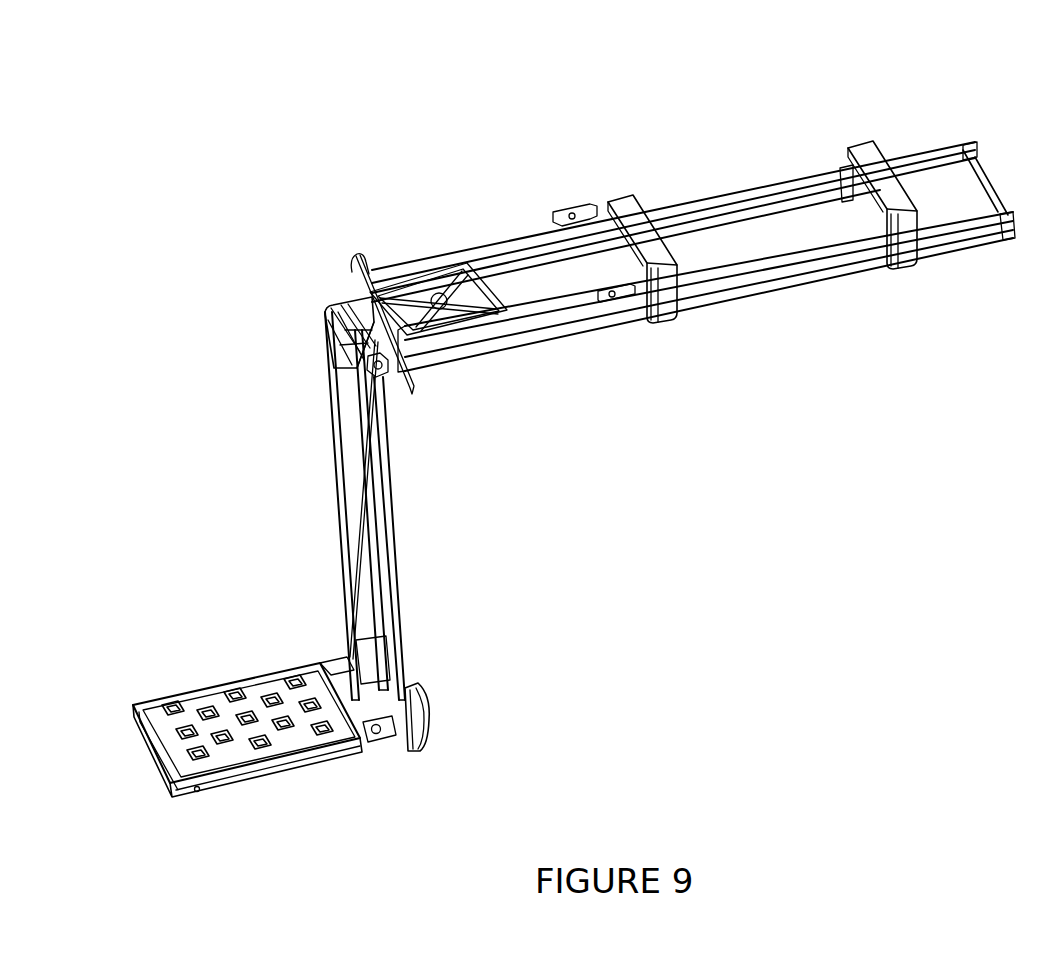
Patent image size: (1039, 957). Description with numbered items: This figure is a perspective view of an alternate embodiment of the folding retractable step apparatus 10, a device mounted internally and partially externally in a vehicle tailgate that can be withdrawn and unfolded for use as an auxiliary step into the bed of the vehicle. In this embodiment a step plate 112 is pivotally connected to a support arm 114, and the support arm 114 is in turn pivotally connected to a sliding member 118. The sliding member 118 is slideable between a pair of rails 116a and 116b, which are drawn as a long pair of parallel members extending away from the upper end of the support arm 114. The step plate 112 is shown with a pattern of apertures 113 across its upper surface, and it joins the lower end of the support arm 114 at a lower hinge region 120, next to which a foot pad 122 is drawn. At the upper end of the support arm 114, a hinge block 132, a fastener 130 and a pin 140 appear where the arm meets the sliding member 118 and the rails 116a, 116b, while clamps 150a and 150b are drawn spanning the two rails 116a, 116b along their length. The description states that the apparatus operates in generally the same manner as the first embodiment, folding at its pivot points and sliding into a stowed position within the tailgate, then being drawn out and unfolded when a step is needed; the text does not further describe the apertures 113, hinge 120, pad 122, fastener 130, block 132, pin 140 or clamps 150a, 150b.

The folding retractable step apparatus 10 is at (707, 517).
The step plate 112 is at (233, 770).
The apertures 113 is at (168, 705).
The support arm 114 is at (390, 512).
The rail 116a is at (520, 237).
The rail 116b is at (550, 332).
The sliding member 118 is at (493, 278).
The lower hinge 120 is at (381, 750).
The foot pad 122 is at (417, 687).
The fastener 130 is at (392, 383).
The upper hinge block 132 is at (333, 300).
The locking pin 140 is at (366, 270).
The first clamp 150a is at (612, 198).
The second clamp 150b is at (867, 143).